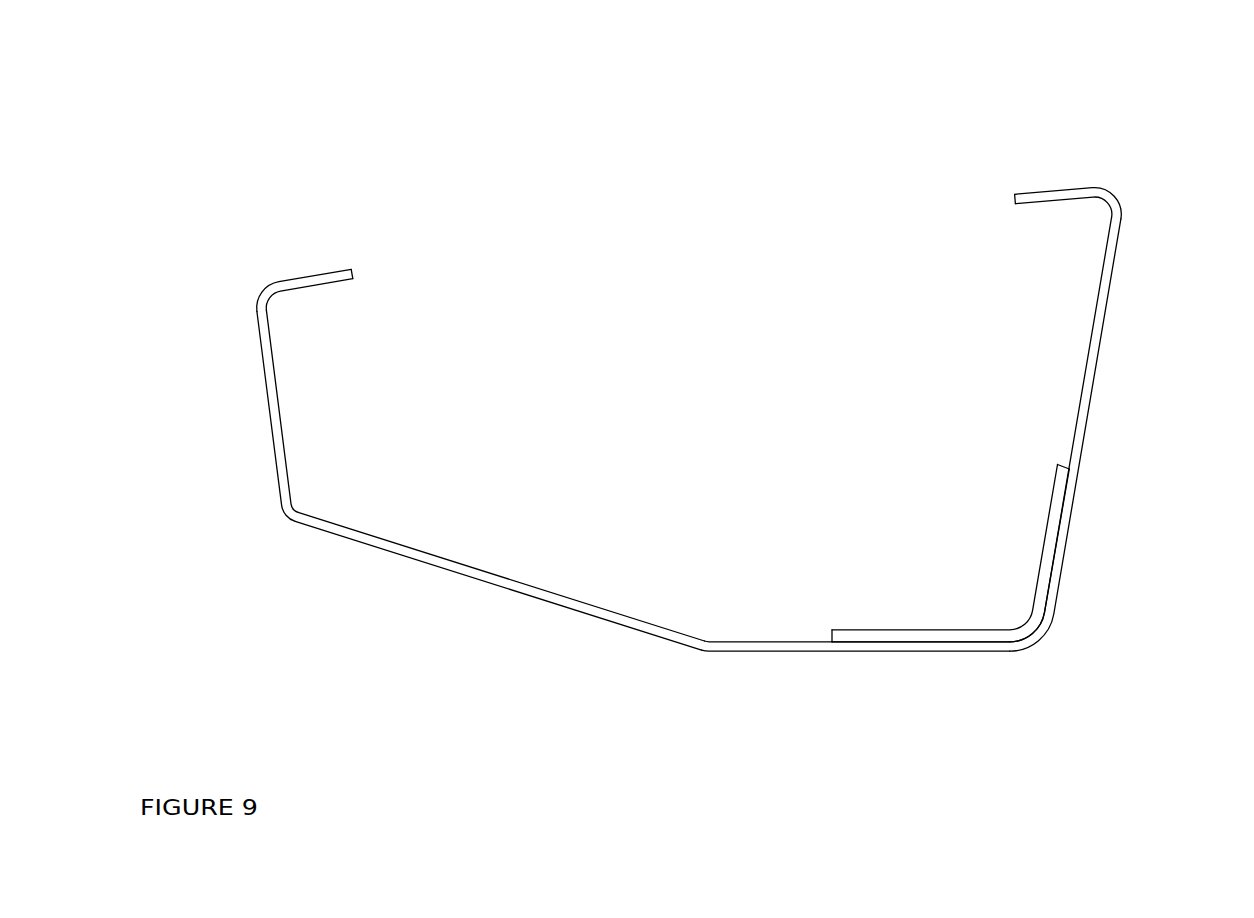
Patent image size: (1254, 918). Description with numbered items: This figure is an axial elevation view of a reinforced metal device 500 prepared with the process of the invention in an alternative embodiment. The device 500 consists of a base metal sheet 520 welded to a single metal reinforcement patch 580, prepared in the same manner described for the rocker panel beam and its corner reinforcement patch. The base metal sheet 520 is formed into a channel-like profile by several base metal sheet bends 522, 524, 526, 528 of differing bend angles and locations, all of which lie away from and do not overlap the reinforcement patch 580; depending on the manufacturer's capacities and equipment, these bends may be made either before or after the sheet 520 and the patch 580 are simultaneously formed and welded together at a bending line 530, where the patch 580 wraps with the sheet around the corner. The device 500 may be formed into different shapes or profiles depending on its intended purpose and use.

The reinforced metal device 500 is at (697, 399).
The base metal sheet 520 is at (623, 620).
The base metal sheet bend 522 is at (712, 648).
The base metal sheet bend 524 is at (285, 517).
The base metal sheet bend 526 is at (275, 278).
The base metal sheet bend 528 is at (1105, 196).
The bending line 530 is at (1032, 630).
The metal reinforcement patch 580 is at (1055, 507).